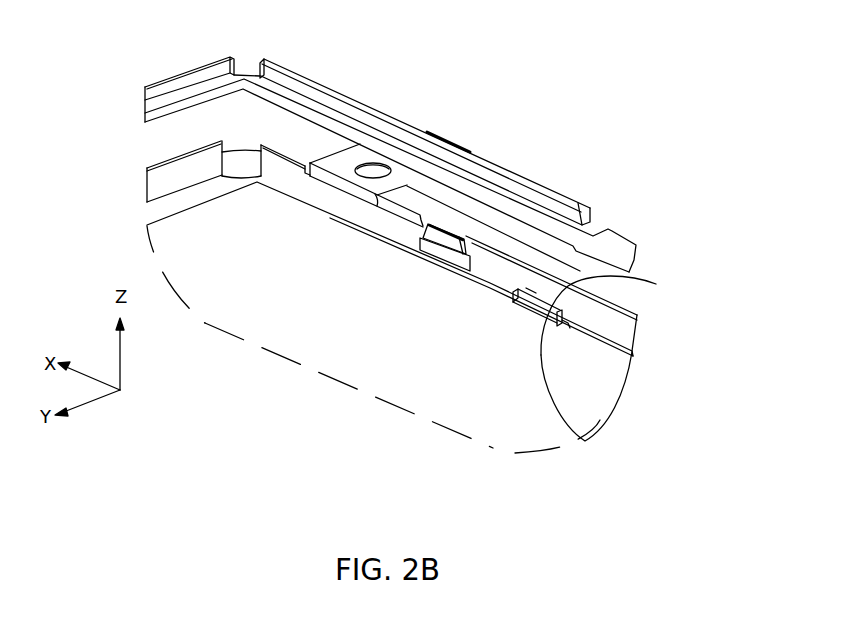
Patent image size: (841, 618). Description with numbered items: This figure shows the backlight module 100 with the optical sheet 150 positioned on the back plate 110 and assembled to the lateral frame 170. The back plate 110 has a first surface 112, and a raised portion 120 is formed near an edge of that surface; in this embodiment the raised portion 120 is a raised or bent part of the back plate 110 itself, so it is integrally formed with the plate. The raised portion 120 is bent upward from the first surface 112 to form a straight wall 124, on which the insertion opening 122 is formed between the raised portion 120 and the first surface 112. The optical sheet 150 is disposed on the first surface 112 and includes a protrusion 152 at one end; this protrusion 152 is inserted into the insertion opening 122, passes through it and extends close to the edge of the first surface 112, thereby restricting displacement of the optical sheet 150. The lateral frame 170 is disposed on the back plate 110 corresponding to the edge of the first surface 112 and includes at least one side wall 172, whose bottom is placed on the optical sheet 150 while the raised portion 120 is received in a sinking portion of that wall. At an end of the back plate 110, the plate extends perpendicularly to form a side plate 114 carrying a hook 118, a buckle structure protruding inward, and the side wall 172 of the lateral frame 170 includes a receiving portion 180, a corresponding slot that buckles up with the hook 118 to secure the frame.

The backlight module 100 is at (94, 39).
The back plate 110 is at (147, 197).
The first surface 112 is at (229, 187).
The side plate 114 is at (625, 327).
The hook 118 is at (438, 233).
The raised portion 120 is at (616, 315).
The insertion opening 122 is at (522, 304).
The straight wall 124 is at (531, 292).
The optical sheet 150 is at (304, 261).
The protrusion 152 is at (560, 388).
The lateral frame 170 is at (313, 87).
The side wall 172 is at (512, 183).
The receiving portion 180 is at (437, 133).